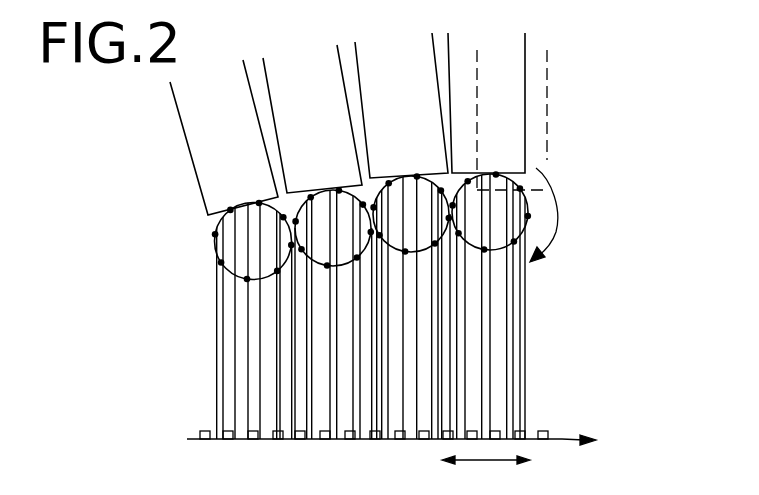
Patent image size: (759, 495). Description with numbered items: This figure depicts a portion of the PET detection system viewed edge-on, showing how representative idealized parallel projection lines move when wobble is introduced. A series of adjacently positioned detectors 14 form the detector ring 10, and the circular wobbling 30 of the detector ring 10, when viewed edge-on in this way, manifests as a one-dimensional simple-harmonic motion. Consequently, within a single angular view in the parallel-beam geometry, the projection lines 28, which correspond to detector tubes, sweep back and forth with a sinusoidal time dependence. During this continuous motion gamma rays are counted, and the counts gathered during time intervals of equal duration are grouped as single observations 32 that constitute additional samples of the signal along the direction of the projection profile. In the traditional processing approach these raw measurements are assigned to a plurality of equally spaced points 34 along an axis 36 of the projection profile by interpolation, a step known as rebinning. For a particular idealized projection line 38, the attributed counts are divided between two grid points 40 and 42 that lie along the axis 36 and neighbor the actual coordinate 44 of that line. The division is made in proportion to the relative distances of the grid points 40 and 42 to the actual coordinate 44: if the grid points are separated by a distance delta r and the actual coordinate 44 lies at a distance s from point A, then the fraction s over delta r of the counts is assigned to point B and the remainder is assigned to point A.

The detector ring 10 is at (184, 133).
The detectors 14 is at (213, 91).
The projection lines 28 is at (496, 361).
The circular wobbling 30 is at (216, 246).
The observations 32 is at (247, 279).
The equally spaced points 34 is at (232, 431).
The axis of projection profile 36 is at (563, 440).
The idealized projection line 38 is at (250, 436).
The grid point 40 is at (310, 403).
The grid point 42 is at (331, 441).
The actual coordinate 44 is at (307, 441).
The point A is at (294, 441).
The point B is at (325, 456).